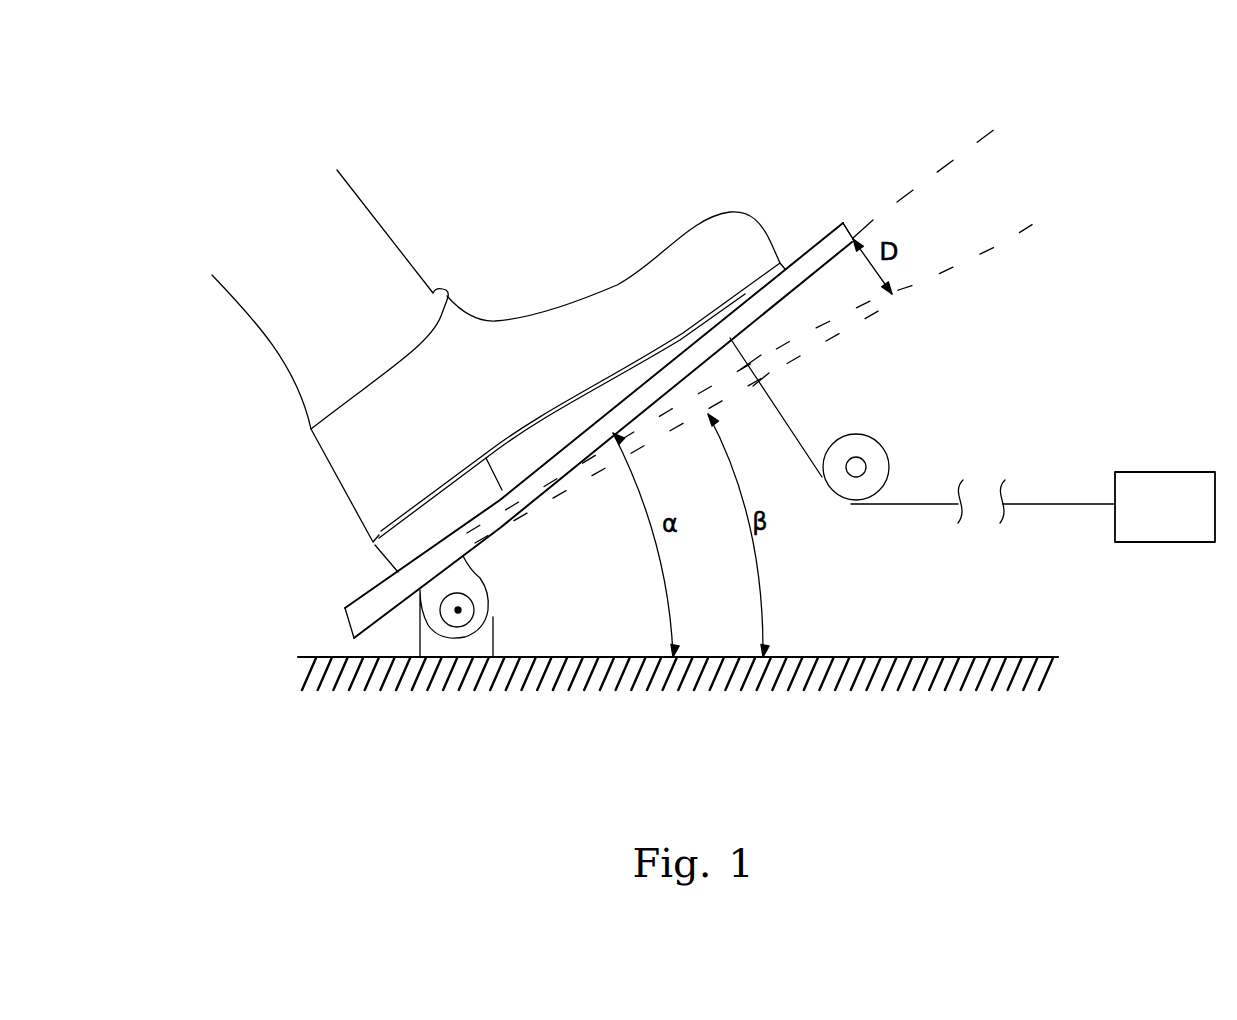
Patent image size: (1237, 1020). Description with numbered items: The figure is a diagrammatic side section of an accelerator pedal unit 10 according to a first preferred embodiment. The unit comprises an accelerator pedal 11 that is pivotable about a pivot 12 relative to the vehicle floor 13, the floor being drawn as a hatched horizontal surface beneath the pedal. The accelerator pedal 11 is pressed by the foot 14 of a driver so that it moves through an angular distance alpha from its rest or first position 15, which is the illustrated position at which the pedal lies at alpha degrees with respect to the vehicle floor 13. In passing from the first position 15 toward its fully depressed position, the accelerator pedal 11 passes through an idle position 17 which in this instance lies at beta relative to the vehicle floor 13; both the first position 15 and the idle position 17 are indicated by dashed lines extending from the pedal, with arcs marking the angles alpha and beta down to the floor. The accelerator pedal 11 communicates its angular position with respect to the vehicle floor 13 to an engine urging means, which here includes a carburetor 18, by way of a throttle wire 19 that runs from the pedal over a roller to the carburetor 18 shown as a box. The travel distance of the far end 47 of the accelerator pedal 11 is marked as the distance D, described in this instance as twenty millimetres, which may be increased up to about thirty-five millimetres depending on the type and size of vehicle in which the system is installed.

The accelerator pedal unit 10 is at (1157, 111).
The accelerator pedal 11 is at (800, 258).
The pivot 12 is at (460, 610).
The vehicle floor 13 is at (922, 657).
The foot 14 is at (485, 340).
The first position 15 is at (957, 158).
The idle position 17 is at (1013, 230).
The carburetor 18 is at (1157, 493).
The throttle wire 19 is at (793, 432).
The far end 47 is at (849, 217).